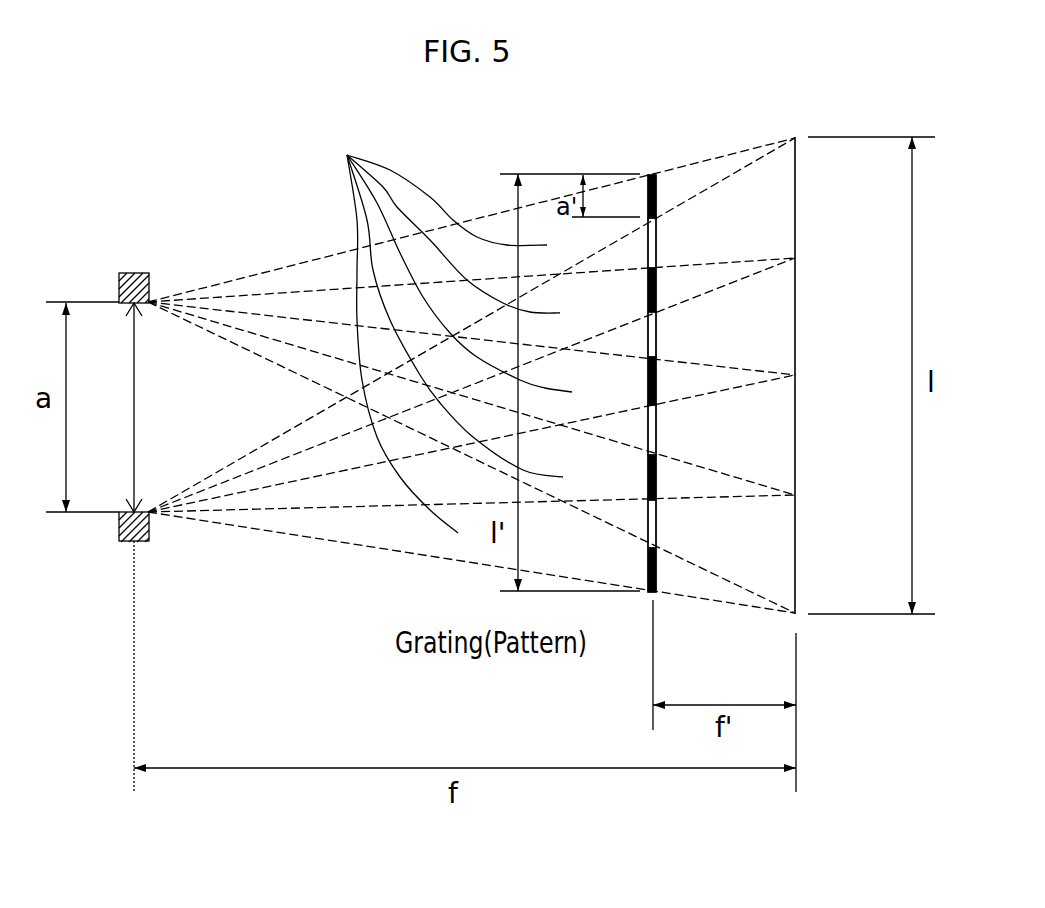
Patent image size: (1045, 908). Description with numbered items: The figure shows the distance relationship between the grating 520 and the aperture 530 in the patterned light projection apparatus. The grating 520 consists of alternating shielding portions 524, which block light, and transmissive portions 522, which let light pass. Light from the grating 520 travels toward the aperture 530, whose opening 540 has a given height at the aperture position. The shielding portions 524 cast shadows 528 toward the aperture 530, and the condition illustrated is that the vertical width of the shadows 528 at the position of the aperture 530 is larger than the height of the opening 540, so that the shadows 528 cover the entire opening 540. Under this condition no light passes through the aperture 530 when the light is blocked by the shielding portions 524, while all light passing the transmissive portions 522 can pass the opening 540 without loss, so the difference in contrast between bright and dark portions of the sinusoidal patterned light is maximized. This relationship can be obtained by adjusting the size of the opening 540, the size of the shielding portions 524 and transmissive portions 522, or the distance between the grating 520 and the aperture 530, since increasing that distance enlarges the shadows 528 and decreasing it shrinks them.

The grating 520 is at (648, 165).
The transmissive portions 522 is at (657, 243).
The shielding portions 524 is at (657, 195).
The shadows 528 is at (437, 333).
The aperture 530 is at (138, 262).
The opening 540 is at (82, 384).